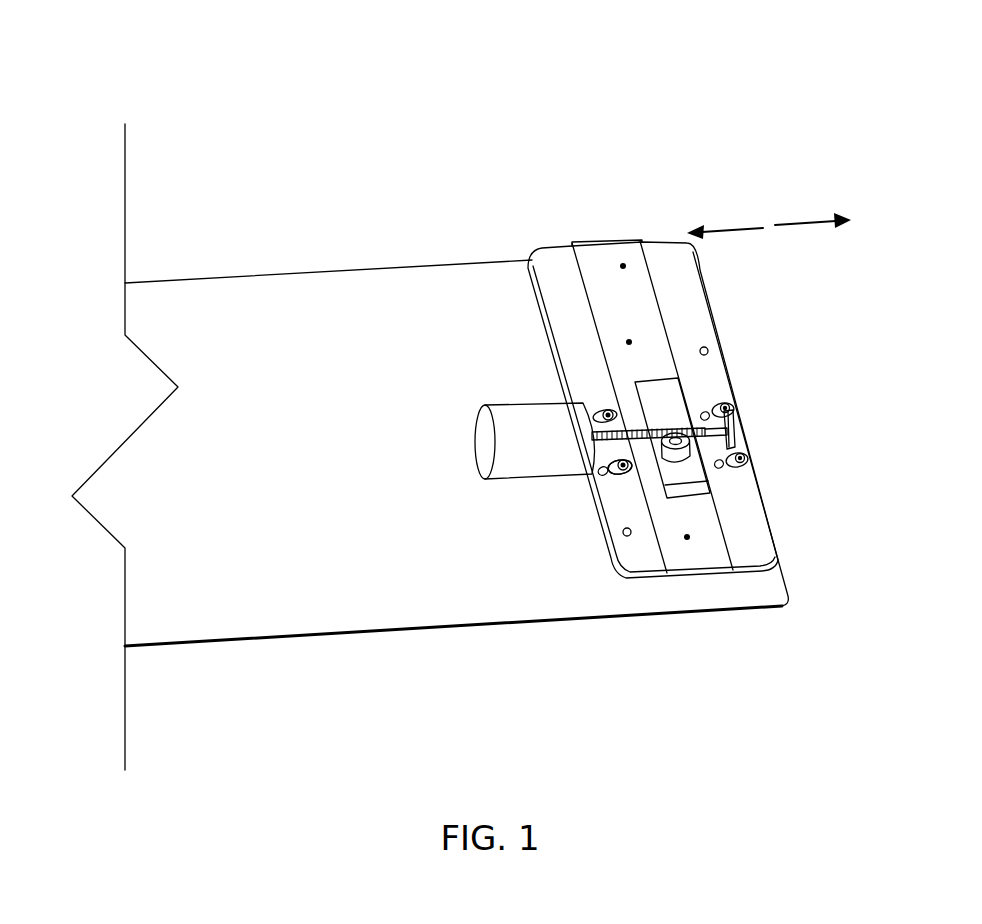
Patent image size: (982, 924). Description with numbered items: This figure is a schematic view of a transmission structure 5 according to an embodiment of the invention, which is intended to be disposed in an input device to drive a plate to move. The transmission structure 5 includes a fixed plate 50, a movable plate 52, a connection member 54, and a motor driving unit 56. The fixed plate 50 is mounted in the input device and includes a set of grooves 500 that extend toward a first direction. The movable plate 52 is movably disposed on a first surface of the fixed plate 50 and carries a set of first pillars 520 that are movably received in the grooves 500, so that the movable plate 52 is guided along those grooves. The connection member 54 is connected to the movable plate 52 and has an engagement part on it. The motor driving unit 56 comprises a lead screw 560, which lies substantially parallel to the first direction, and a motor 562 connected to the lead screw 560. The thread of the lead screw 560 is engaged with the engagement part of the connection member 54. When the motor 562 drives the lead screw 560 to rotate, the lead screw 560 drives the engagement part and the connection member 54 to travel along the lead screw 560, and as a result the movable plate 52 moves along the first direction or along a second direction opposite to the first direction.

The transmission structure 5 is at (578, 116).
The fixed plate 50 is at (542, 248).
The movable plate 52 is at (664, 410).
The connection member 54 is at (688, 460).
The motor driving unit 56 is at (510, 405).
The grooves 500 is at (607, 412).
The first pillars 520 is at (733, 408).
The lead screw 560 is at (640, 470).
The motor 562 is at (527, 453).